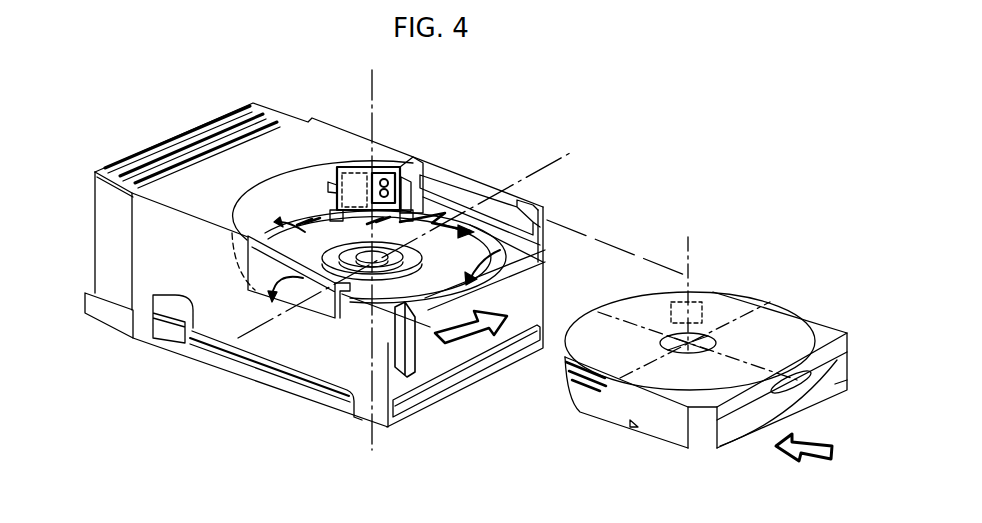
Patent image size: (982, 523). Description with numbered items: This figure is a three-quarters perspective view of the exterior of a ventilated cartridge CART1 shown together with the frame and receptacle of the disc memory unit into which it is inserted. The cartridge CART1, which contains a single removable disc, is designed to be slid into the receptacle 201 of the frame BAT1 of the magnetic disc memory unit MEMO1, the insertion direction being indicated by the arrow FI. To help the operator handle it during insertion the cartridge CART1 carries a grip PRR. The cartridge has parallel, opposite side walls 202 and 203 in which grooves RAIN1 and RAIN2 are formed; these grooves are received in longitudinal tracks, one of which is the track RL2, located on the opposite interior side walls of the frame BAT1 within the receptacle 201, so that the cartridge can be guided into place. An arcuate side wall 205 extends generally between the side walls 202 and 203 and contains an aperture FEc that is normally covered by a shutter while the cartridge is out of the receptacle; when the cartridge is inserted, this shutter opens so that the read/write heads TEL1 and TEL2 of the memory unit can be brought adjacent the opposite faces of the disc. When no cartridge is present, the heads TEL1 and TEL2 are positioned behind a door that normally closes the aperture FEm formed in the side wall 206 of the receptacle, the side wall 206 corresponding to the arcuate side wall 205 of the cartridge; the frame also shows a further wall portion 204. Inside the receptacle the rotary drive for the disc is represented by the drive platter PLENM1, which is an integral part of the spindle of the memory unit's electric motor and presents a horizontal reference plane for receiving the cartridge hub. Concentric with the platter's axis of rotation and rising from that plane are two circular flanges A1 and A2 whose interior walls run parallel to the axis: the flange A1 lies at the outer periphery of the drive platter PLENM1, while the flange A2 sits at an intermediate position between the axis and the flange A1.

The receptacle 201 is at (430, 377).
The side wall of housing 204 is at (157, 277).
The side wall 206 is at (263, 197).
The memory module MEMO1 is at (325, 112).
The aperture FEm is at (383, 168).
The read/write head TEL1 is at (388, 172).
The read/write head TEL2 is at (401, 177).
The circular flange A2 is at (374, 215).
The circular flange A1 is at (478, 274).
The track RL2 is at (517, 202).
The drive platter PLENM1 is at (440, 272).
The frame BAT1 is at (298, 357).
The cartridge CART1 is at (670, 367).
The side wall 203 is at (822, 327).
The side wall 202 is at (612, 403).
The arcuate side wall 205 is at (578, 324).
The aperture FEc is at (700, 307).
The groove RAIN1 is at (565, 375).
The groove RAIN2 is at (530, 417).
The grip PRR is at (836, 384).
The arrow FI is at (804, 464).